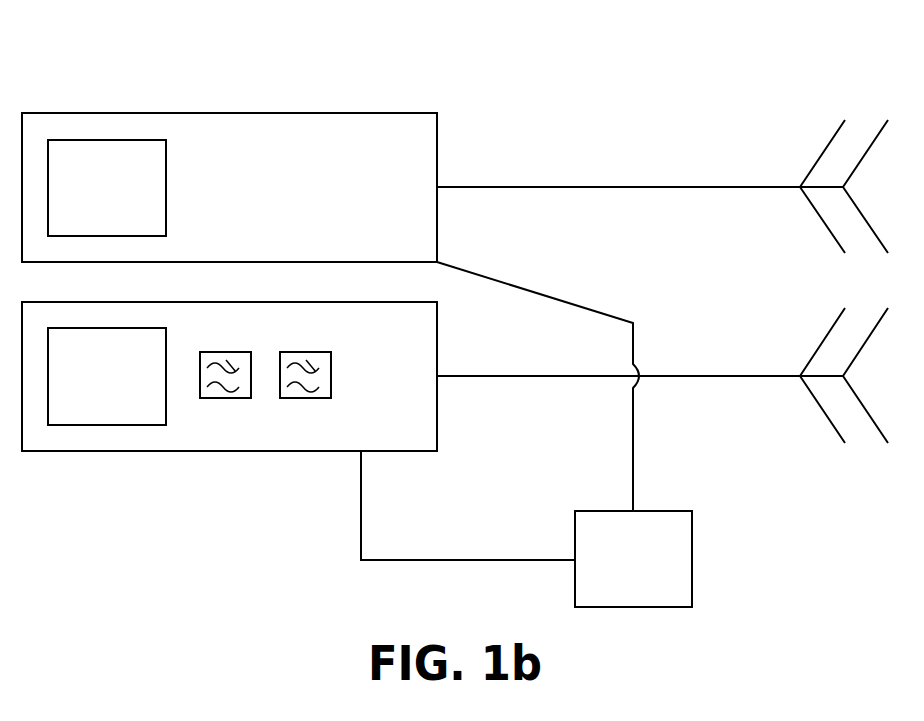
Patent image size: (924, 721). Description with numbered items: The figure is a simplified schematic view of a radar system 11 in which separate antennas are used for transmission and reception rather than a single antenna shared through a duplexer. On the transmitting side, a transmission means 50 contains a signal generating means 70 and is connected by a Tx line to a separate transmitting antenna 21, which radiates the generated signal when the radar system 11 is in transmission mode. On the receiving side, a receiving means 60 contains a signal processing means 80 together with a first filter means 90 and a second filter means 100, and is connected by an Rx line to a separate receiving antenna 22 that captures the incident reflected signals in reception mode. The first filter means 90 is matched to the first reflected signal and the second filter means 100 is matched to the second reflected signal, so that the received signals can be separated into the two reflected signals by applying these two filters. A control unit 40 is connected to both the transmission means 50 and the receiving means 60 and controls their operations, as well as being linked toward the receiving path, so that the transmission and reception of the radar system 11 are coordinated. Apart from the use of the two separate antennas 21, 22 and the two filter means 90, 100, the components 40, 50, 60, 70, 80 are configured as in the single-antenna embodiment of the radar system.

The radar system 11 is at (210, 566).
The transmitting antenna 21 is at (803, 106).
The receiving antenna 22 is at (801, 456).
The control unit 40 is at (649, 571).
The transmission means 50 is at (423, 151).
The receiving means 60 is at (423, 341).
The signal generating means 70 is at (122, 201).
The signal processing means 80 is at (122, 391).
The first filter means 90 is at (222, 398).
The second filter means 100 is at (302, 398).